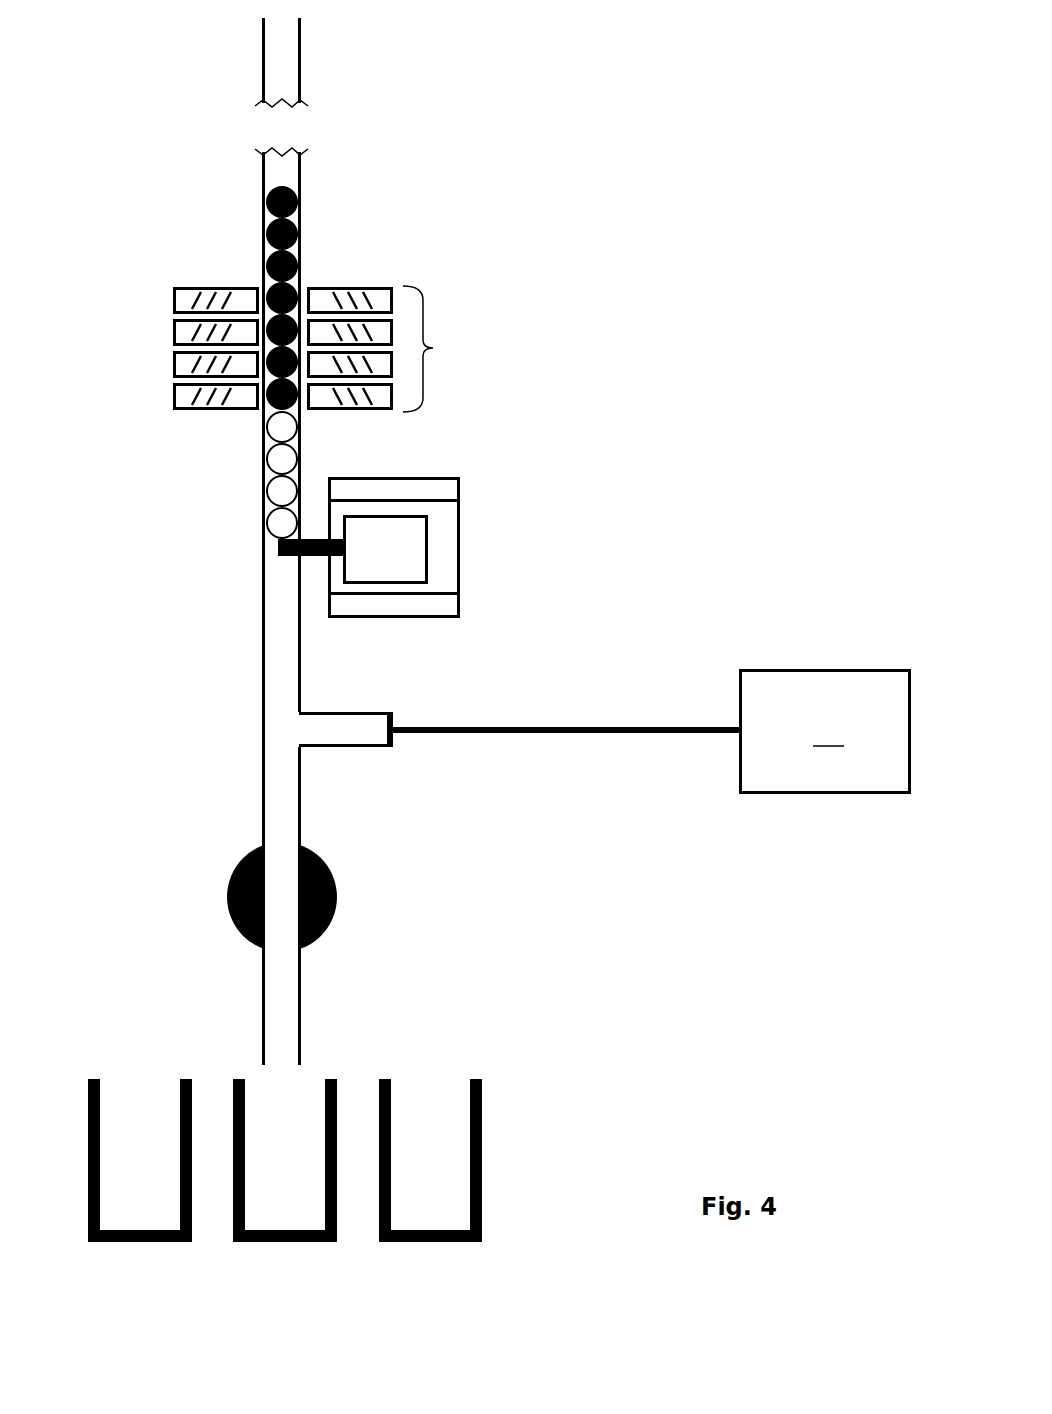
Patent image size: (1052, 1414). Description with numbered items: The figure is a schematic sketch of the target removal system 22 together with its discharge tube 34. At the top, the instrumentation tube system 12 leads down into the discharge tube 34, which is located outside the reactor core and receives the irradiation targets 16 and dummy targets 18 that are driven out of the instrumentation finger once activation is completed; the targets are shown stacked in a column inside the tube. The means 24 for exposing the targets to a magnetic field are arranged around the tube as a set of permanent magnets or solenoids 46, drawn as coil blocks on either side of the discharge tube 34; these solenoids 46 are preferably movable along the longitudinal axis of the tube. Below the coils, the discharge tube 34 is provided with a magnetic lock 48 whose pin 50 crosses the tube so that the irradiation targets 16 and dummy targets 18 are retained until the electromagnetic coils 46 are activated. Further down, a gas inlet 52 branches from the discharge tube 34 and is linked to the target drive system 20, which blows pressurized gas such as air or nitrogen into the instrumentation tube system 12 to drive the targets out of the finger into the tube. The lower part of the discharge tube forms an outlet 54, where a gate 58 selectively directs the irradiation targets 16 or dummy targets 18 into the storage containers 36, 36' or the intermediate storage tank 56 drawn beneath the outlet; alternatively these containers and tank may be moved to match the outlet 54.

The instrumentation tube system 12 is at (278, 60).
The target removal system 22 is at (477, 129).
The dummy targets 18 is at (262, 232).
The irradiation targets 16 is at (285, 460).
The solenoids 46 is at (357, 288).
The means for exposing targets to a magnetic field 24 is at (437, 349).
The pin 50 is at (288, 562).
The magnetic lock 48 is at (407, 546).
The discharge tube 34 is at (276, 640).
The gas inlet 52 is at (340, 724).
The target drive system 20 is at (651, 732).
The gate 58 is at (226, 892).
The outlet 54 is at (285, 990).
The storage container 36' is at (105, 1179).
The storage container 36 is at (322, 1178).
The intermediate storage tank 56 is at (460, 1190).